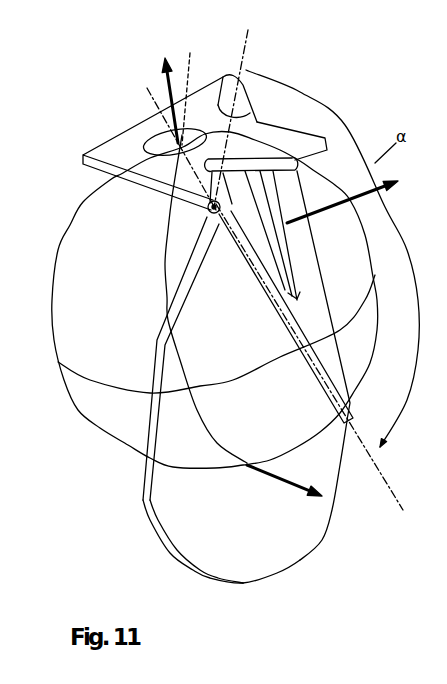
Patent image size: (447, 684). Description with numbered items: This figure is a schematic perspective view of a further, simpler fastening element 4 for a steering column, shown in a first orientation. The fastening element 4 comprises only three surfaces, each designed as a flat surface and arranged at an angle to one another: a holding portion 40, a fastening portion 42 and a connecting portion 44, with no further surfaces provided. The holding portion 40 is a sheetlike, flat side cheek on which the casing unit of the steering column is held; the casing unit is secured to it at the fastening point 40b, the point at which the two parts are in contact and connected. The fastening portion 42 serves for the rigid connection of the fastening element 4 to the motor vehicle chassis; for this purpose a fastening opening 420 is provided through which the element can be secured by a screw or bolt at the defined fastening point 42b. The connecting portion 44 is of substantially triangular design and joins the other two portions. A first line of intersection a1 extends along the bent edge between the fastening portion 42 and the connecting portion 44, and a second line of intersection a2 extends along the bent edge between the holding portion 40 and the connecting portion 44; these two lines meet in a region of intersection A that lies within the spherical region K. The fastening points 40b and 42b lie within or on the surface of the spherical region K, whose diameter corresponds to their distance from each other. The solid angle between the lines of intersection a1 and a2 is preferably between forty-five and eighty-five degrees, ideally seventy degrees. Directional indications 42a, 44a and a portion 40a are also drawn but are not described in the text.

The fastening element 4 is at (345, 85).
The holding portion 40 is at (183, 490).
The hoop first portion 40a is at (272, 473).
The fastening point 40b is at (247, 465).
The fastening portion 42 is at (130, 150).
The plate pressing direction 42a is at (170, 86).
The fastening point 42b is at (168, 133).
The fastening opening 420 is at (192, 90).
The connecting portion 44 is at (313, 320).
The bracket swing direction 44a is at (362, 200).
The region of intersection A is at (204, 216).
The spherical region K is at (74, 194).
The first line of intersection a1 is at (246, 71).
The second line of intersection a2 is at (388, 486).